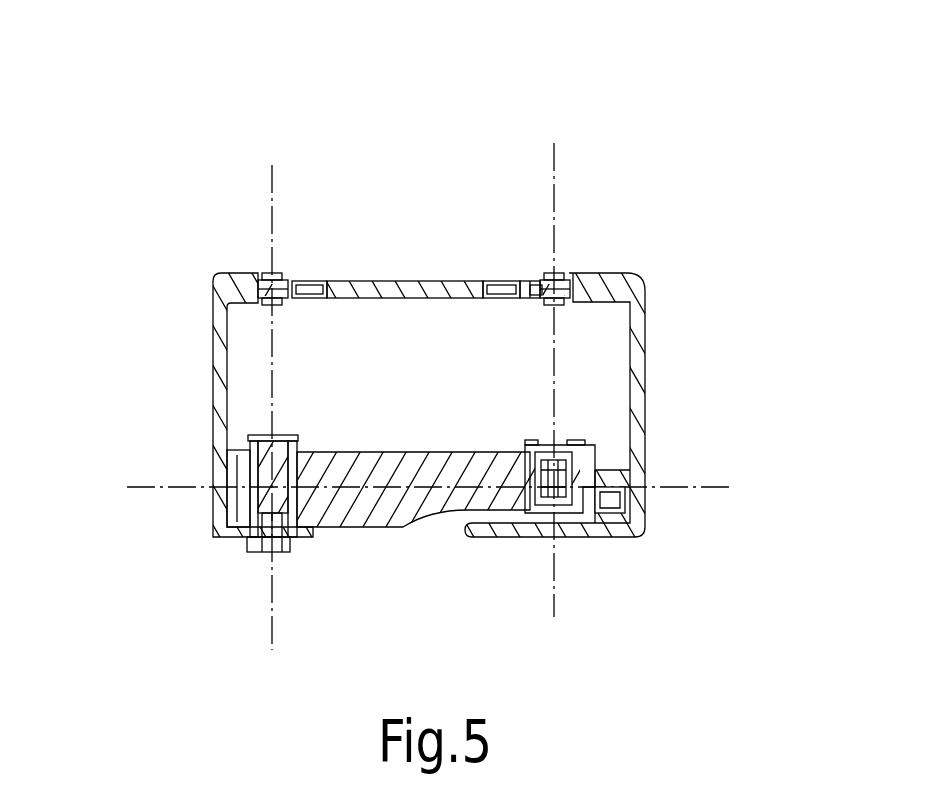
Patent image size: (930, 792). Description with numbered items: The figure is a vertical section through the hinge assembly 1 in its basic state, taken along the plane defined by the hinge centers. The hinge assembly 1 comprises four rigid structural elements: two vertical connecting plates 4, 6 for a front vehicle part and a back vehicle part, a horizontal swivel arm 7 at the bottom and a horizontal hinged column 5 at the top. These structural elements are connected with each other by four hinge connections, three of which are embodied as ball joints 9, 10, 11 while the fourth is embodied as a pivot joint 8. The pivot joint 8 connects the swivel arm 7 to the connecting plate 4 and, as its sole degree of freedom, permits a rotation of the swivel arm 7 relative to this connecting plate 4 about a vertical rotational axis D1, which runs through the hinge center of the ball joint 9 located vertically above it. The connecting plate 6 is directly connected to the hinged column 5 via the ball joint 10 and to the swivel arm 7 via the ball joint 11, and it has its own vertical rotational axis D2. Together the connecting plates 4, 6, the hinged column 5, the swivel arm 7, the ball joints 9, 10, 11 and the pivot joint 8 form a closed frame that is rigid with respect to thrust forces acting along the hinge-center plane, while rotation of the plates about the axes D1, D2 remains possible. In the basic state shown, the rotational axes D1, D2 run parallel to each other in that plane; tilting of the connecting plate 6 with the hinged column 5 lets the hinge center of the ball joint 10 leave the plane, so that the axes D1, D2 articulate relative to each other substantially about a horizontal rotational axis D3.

The hinge assembly 1 is at (465, 175).
The connecting plate 4 is at (222, 400).
The hinged column 5 is at (390, 292).
The connecting plate 6 is at (635, 388).
The swivel arm 7 is at (385, 495).
The pivot joint 8 is at (247, 552).
The ball joint 9 is at (259, 264).
The ball joint 10 is at (559, 262).
The ball joint 11 is at (568, 543).
The vertical rotational axis D1 is at (277, 197).
The vertical rotational axis D2 is at (558, 167).
The horizontal rotational axis D3 is at (707, 487).